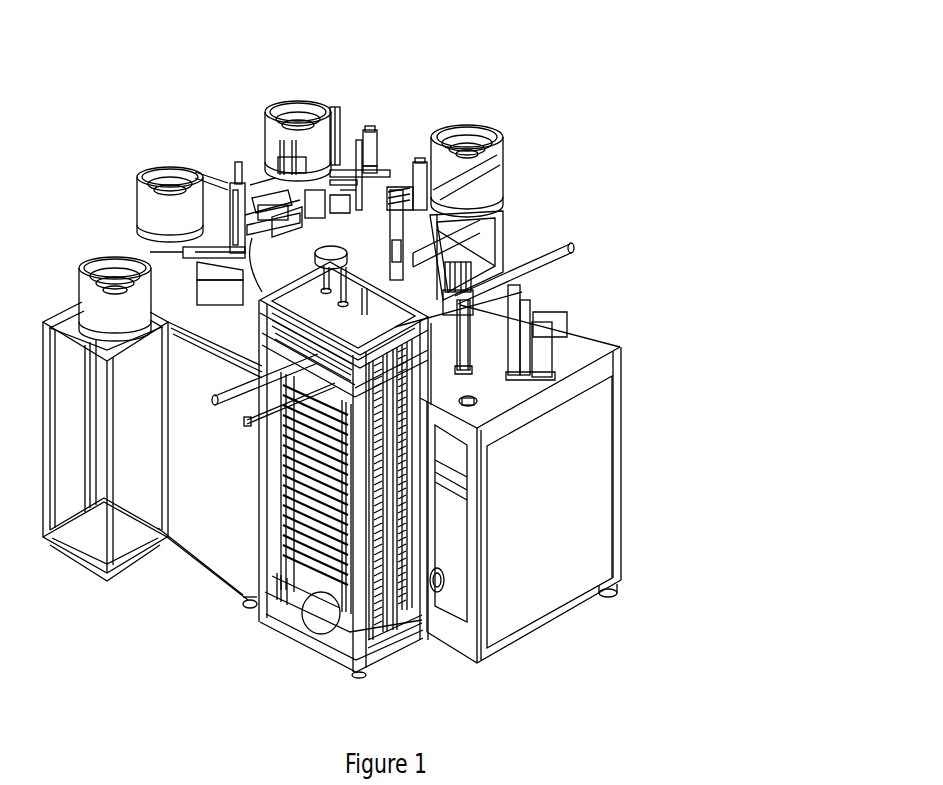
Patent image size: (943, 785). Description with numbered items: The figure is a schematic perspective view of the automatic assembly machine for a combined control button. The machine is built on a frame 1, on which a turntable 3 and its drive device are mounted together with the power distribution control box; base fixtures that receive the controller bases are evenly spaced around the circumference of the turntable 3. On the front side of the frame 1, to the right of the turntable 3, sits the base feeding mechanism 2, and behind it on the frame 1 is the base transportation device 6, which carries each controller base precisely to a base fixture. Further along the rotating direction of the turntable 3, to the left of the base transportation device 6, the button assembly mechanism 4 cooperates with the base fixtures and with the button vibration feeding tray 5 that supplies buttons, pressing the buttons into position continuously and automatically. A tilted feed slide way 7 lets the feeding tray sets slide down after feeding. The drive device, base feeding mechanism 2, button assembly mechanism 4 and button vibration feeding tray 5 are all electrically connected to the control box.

The frame 1 is at (557, 488).
The base feeding mechanism 2 is at (333, 545).
The turntable 3 is at (345, 238).
The button assembly mechanism 4 is at (470, 138).
The button vibration feeding tray 5 is at (483, 188).
The base transportation device 6 is at (490, 283).
The feed slide way 7 is at (540, 307).